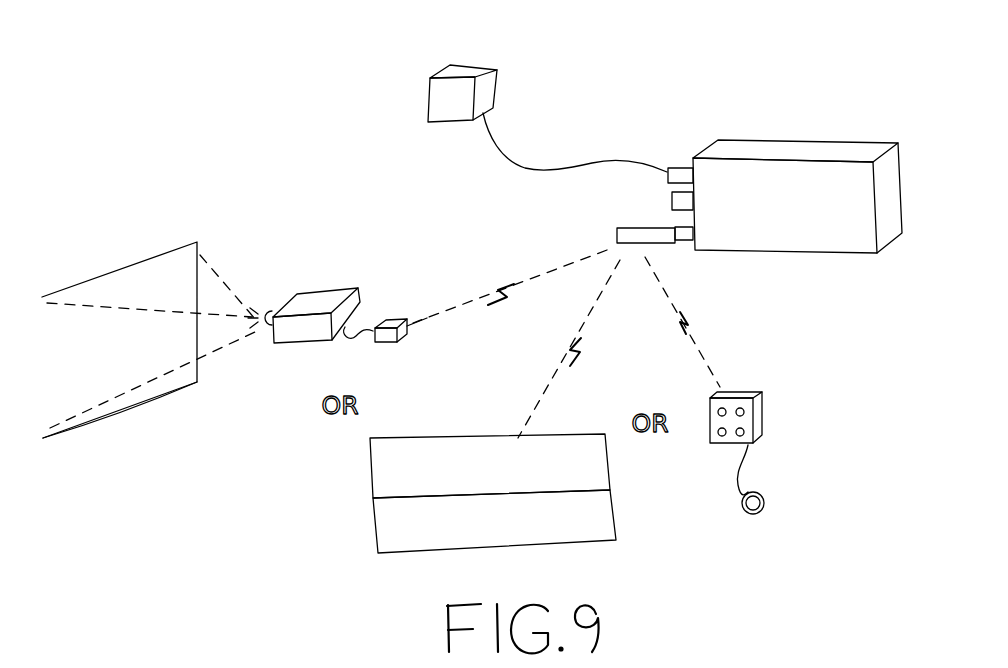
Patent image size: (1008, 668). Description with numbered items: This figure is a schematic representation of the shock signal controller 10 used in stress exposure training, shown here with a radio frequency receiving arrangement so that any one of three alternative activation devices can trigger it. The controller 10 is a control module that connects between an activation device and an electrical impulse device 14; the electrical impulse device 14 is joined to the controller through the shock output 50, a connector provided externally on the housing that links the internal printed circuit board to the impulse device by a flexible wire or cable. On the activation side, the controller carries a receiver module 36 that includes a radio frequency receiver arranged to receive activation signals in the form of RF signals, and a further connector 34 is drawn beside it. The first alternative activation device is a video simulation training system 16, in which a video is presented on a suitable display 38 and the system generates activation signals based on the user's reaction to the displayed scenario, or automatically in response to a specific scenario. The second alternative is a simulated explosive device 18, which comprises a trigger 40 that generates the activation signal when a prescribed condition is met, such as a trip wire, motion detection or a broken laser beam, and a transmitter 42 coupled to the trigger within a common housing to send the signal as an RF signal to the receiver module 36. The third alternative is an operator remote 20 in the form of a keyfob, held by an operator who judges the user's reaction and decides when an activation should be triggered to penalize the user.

The shock signal controller 10 is at (790, 163).
The electrical impulse device 14 is at (477, 67).
The video simulation training system 16 is at (152, 147).
The simulated explosive device 18 is at (459, 503).
The operator remote 20 is at (767, 410).
The connector 34 is at (688, 242).
The receiver module 36 is at (640, 225).
The display 38 is at (139, 260).
The trigger 40 is at (612, 525).
The transmitter 42 is at (603, 473).
The shock output 50 is at (675, 165).